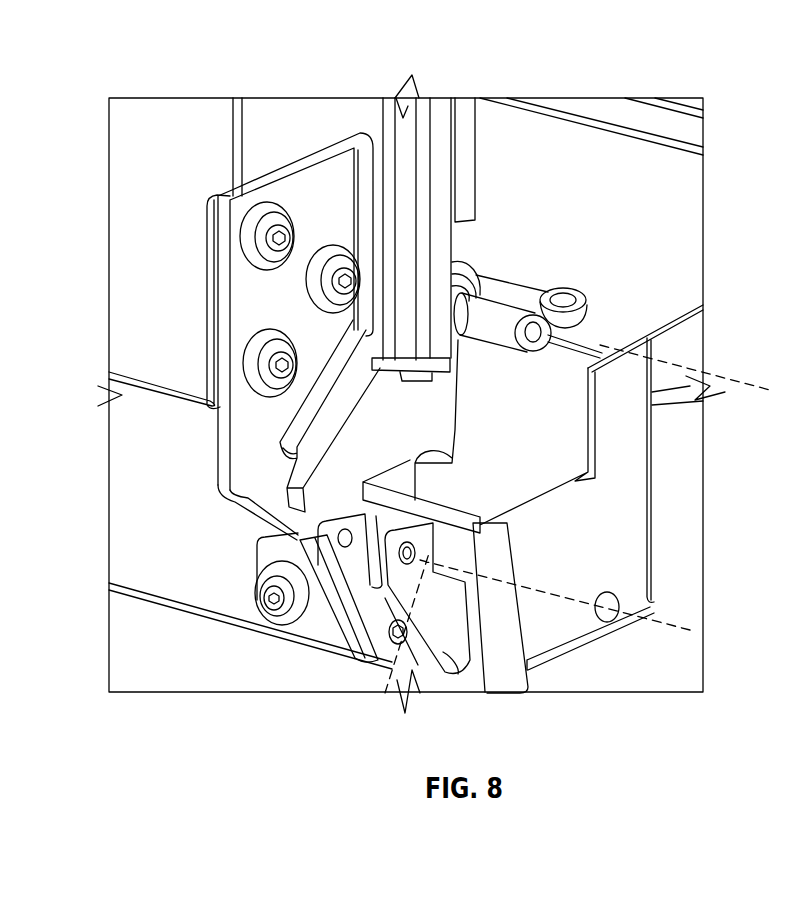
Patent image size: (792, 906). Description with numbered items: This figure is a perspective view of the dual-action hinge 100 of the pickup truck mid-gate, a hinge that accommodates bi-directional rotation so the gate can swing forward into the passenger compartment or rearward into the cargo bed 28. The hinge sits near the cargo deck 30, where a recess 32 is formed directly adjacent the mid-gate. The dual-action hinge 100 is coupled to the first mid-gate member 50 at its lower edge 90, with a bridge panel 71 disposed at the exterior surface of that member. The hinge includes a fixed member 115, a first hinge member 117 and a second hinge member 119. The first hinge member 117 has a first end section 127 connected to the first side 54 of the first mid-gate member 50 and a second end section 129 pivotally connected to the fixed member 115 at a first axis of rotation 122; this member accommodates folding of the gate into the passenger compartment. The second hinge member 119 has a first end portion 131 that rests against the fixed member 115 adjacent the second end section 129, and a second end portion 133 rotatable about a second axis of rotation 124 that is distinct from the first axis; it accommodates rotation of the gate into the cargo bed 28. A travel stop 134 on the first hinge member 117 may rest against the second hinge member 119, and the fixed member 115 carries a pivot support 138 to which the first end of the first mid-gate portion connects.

The cargo bed 28 is at (675, 106).
The cargo deck 30 is at (597, 103).
The recess 32 is at (650, 207).
The first mid-gate member 50 is at (158, 412).
The first side 54 is at (256, 117).
The bridge panel 71 is at (482, 137).
The lower edge 90 is at (148, 398).
The dual-action hinge 100 is at (602, 659).
The fixed member 115 is at (462, 679).
The first hinge member 117 is at (256, 281).
The second hinge member 119 is at (399, 428).
The first axis of rotation 122 is at (385, 693).
The second axis of rotation 124 is at (747, 388).
The first end section 127 is at (318, 199).
The second end section 129 is at (365, 505).
The first end portion 131 is at (262, 545).
The second end portion 133 is at (463, 347).
The travel stop 134 is at (325, 414).
The pivot support 138 is at (441, 607).